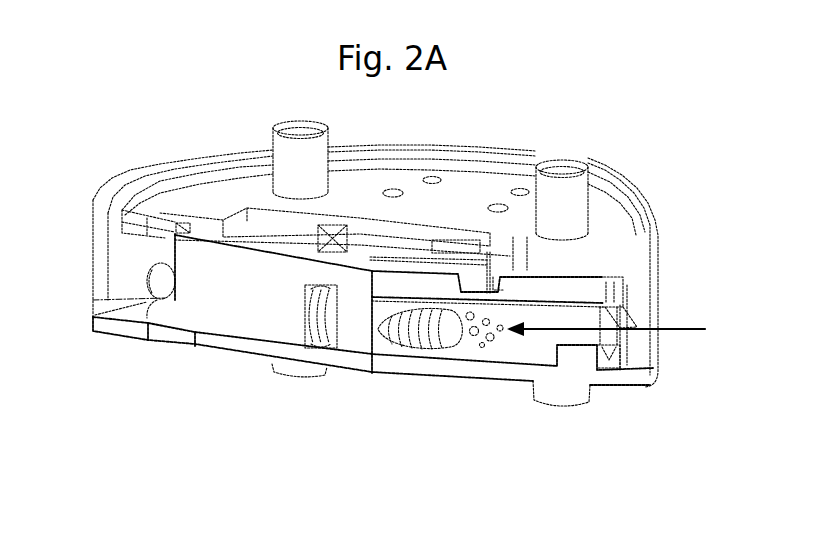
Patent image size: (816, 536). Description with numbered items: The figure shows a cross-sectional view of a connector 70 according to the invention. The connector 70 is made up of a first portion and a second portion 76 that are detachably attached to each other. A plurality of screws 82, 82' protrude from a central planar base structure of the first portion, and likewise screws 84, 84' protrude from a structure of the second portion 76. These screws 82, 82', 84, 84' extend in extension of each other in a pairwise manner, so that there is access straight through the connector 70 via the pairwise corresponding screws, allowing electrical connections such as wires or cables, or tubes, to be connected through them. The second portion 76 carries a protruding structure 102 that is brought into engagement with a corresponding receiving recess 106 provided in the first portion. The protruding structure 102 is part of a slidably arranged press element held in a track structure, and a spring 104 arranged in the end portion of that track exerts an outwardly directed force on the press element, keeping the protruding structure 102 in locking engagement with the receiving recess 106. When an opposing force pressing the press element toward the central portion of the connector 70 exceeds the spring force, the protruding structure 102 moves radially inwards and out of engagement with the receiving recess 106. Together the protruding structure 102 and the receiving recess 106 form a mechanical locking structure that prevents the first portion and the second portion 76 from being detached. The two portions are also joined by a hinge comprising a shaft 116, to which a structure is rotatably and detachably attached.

The connector 70 is at (112, 391).
The second portion 76 is at (430, 376).
The screw 82 is at (293, 110).
The screw 82' is at (562, 150).
The screw 84 is at (290, 414).
The screw 84' is at (562, 448).
The protruding structure 102 is at (620, 346).
The spring 104 is at (322, 331).
The receiving recess 106 is at (632, 311).
The shaft 116 is at (157, 283).